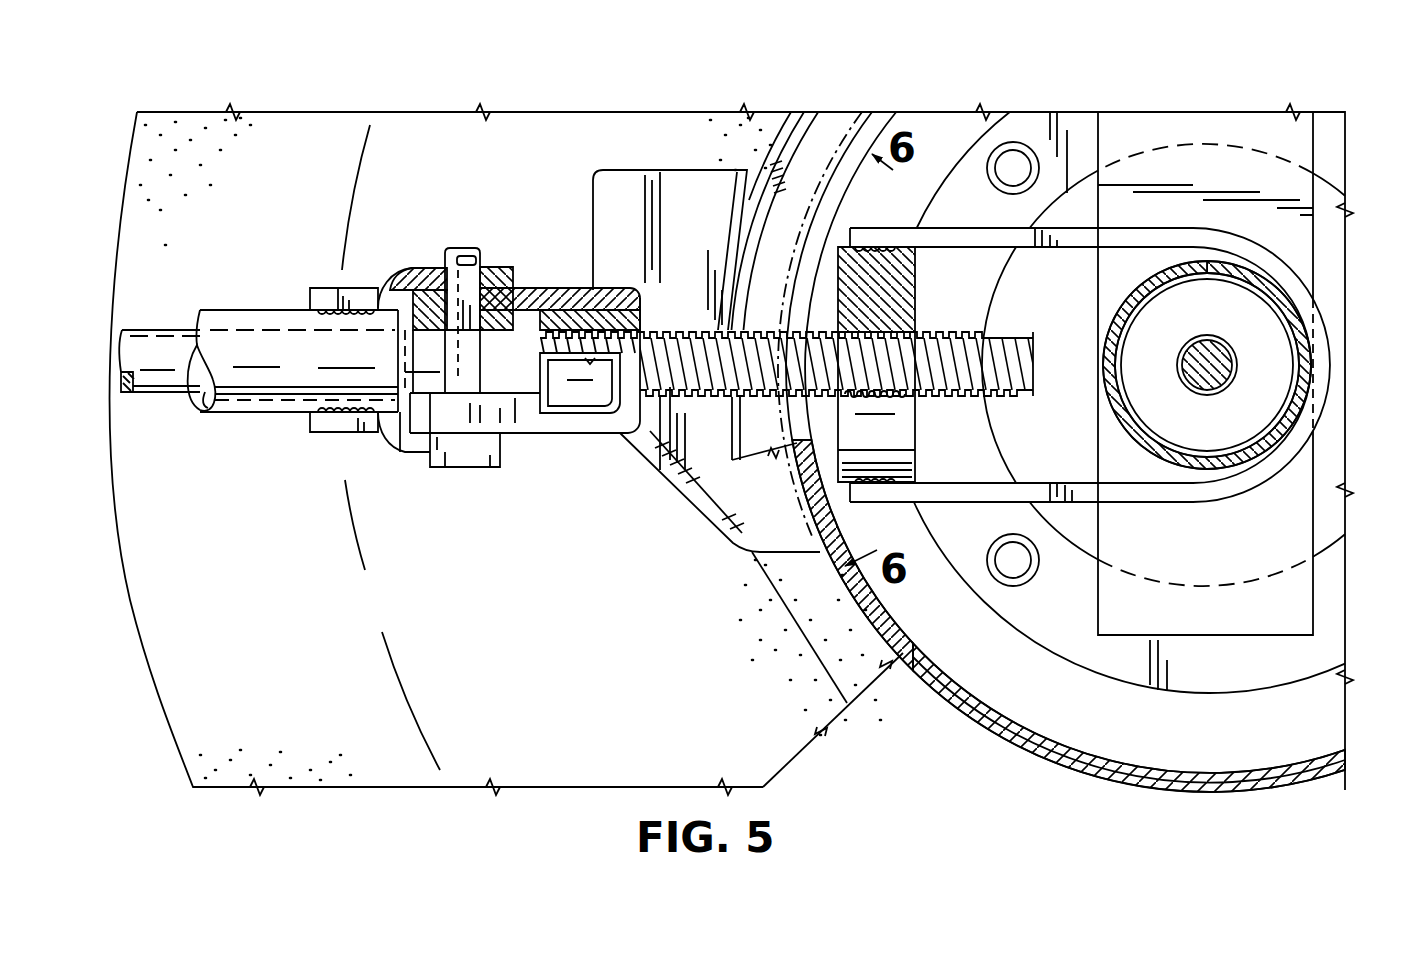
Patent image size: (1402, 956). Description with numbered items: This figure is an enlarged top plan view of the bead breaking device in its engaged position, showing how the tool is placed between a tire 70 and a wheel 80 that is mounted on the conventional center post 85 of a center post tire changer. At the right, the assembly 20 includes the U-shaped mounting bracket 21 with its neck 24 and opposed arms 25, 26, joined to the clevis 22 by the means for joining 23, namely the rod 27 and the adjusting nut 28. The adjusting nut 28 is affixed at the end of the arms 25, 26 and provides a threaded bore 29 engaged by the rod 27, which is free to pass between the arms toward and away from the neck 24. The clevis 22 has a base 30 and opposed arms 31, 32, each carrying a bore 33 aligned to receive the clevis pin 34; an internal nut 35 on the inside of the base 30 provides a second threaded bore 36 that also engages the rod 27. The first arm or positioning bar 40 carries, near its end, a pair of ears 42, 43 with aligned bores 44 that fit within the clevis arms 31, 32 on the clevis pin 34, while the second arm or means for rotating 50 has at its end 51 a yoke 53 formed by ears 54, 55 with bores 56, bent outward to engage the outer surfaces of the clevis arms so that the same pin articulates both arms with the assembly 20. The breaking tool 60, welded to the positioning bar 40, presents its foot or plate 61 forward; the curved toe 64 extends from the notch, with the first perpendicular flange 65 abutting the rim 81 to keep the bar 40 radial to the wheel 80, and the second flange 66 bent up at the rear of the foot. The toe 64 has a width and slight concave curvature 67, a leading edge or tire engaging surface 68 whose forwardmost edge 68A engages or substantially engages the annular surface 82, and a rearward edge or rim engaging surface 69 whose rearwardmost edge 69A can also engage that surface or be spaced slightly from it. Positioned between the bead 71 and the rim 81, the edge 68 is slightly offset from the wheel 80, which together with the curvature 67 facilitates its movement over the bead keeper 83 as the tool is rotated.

The assembly 20 is at (1068, 216).
The mounting bracket 21 is at (1138, 226).
The clevis 22 is at (599, 444).
The means for joining 23 is at (826, 320).
The neck 24 is at (1325, 349).
The arm 25 is at (1081, 498).
The arm 26 is at (974, 238).
The rod 27 is at (1010, 352).
The adjusting nut 28 is at (904, 276).
The threaded bore 29 is at (903, 338).
The base 30 is at (638, 312).
The clevis arm 31 is at (525, 416).
The clevis arm 32 is at (538, 296).
The bore 33 is at (443, 265).
The clevis pin 34 is at (461, 250).
The internal nut 35 is at (574, 395).
The threaded bore 36 is at (594, 310).
The first arm or positioning bar 40 is at (153, 396).
The ear 42 is at (440, 436).
The ear 43 is at (500, 295).
The bore 44 is at (447, 318).
The second arm or means for rotating 50 is at (237, 414).
The end 51 is at (377, 347).
The yoke 53 is at (395, 455).
The ear 54 is at (331, 430).
The ear 55 is at (328, 297).
The bore 56 is at (481, 252).
The breaking tool 60 is at (672, 168).
The foot or plate 61 is at (632, 190).
The toe 64 is at (777, 484).
The first perpendicular flange 65 is at (735, 210).
The second flange 66 is at (681, 494).
The width 67 is at (818, 504).
The leading edge or tire engaging surface 68 is at (783, 554).
The forwardmost edge 68A is at (820, 554).
The rearward edge or rim engaging surface 69 is at (745, 416).
The rearwardmost edge 69A is at (745, 408).
The tire 70 is at (398, 792).
The tire bead 71 is at (860, 677).
The wheel 80 is at (1031, 110).
The rim 81 is at (777, 130).
The annular surface or bead keeper 82 is at (1000, 735).
The bead keeper 83 is at (950, 690).
The center post 85 is at (1193, 462).